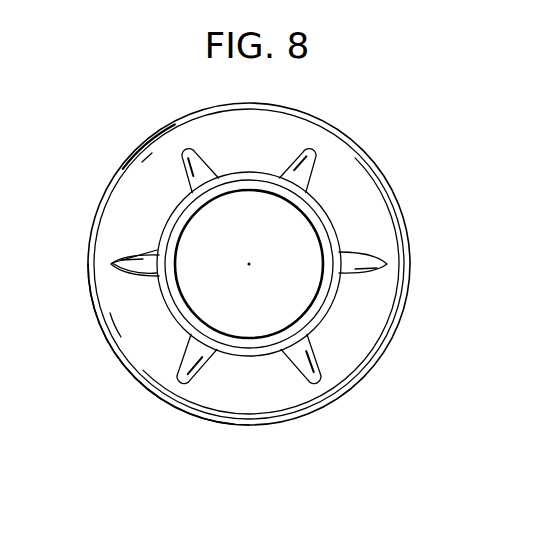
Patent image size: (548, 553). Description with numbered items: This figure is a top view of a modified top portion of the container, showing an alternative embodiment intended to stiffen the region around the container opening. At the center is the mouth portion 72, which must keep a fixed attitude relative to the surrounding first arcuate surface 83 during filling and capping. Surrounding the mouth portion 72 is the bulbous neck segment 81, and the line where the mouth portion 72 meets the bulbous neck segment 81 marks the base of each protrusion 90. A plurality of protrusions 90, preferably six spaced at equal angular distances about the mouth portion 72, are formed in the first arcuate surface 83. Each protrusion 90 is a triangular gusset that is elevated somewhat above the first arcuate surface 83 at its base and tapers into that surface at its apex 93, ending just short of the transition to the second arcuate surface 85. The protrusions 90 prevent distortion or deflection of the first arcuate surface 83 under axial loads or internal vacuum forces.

The mouth portion 72 is at (170, 216).
The bulbous neck segment 81 is at (182, 116).
The first arcuate surface 83 is at (248, 370).
The second arcuate surface 85 is at (138, 380).
The protrusion 90 is at (357, 256).
The apex 93 is at (115, 263).